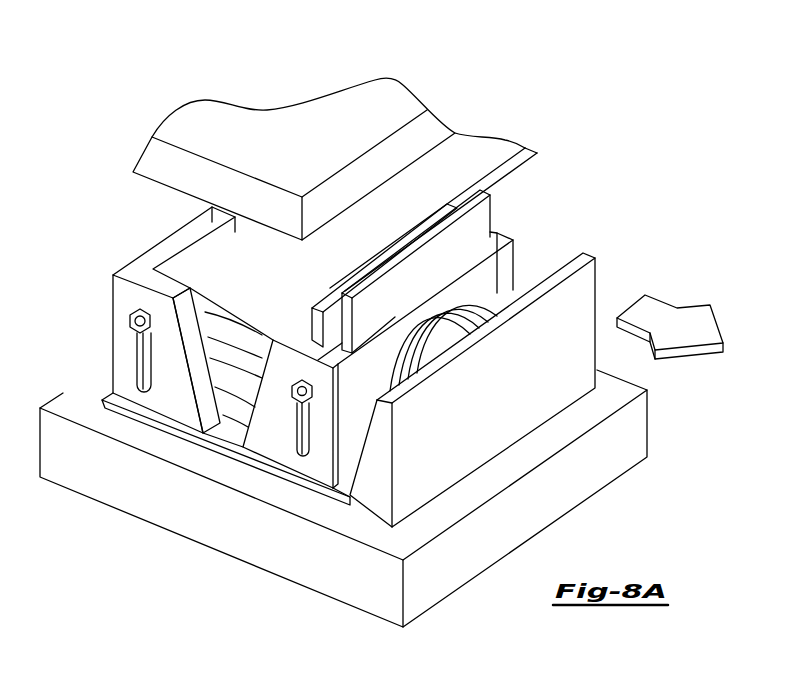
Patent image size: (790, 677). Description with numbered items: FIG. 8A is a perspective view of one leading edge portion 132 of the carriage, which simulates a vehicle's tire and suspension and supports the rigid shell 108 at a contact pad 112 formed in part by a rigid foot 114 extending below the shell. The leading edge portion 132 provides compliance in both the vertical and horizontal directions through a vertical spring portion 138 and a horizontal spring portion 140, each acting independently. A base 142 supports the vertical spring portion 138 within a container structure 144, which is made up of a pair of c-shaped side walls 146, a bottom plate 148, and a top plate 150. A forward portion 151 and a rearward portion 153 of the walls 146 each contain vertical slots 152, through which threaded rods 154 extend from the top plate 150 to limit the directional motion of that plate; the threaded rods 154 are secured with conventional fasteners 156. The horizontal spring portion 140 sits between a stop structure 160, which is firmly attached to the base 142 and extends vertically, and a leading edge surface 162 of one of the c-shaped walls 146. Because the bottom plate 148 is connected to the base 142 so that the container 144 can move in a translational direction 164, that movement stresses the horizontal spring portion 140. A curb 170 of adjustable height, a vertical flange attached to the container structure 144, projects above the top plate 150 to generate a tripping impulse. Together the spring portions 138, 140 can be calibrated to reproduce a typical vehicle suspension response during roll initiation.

The leading edge portion 132 is at (117, 108).
The rigid shell 108 is at (174, 168).
The rigid feet 114 is at (283, 265).
The contact pads 112 is at (270, 302).
The rearward portion 153 is at (538, 163).
The threaded rods 154 is at (128, 330).
The horizontal spring portion 140 is at (515, 283).
The curb 170 is at (433, 285).
The translational direction 164 is at (677, 325).
The stop structure 160 is at (503, 415).
The leading edge surface 162 is at (355, 409).
The top plate 150 is at (190, 260).
The c-shaped side walls 146 is at (132, 268).
The container structure 144 is at (112, 310).
The vertical spring portion 138 is at (236, 378).
The fasteners 156 is at (150, 330).
The bottom plate 148 is at (222, 440).
The forward portion 151 is at (270, 443).
The vertical slots 152 is at (308, 440).
The base 142 is at (360, 577).